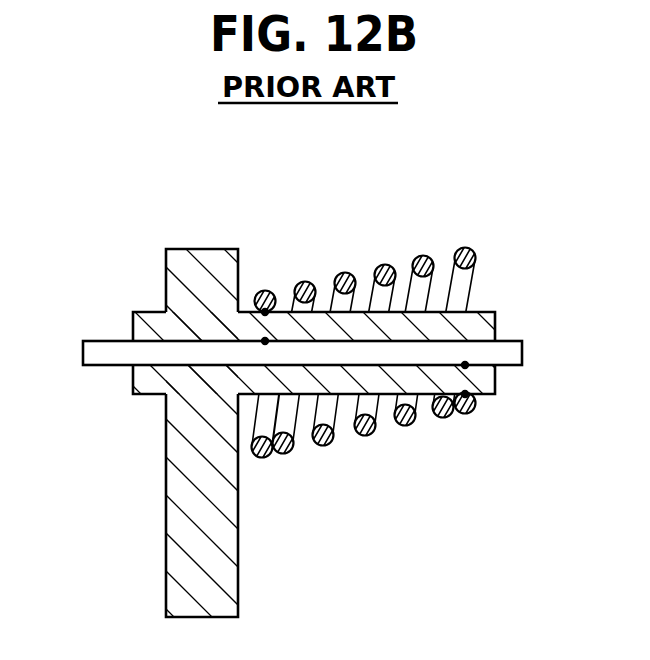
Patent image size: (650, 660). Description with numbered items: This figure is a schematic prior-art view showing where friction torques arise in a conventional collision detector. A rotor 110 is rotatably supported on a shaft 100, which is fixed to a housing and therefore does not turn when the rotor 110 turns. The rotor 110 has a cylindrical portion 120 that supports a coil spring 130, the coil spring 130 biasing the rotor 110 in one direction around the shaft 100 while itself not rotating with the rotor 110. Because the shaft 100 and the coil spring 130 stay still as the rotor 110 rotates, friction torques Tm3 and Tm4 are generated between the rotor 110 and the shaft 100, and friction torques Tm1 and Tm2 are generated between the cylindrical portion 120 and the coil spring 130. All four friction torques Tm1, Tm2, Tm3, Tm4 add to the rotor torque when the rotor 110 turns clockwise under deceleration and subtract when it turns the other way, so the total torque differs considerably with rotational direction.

The shaft 100 is at (98, 346).
The rotor 110 is at (204, 268).
The cylindrical portion 120 is at (478, 330).
The coil spring 130 is at (424, 257).
The friction torque Tm1 is at (265, 312).
The friction torque Tm2 is at (465, 394).
The friction torque Tm3 is at (265, 341).
The friction torque Tm4 is at (465, 365).